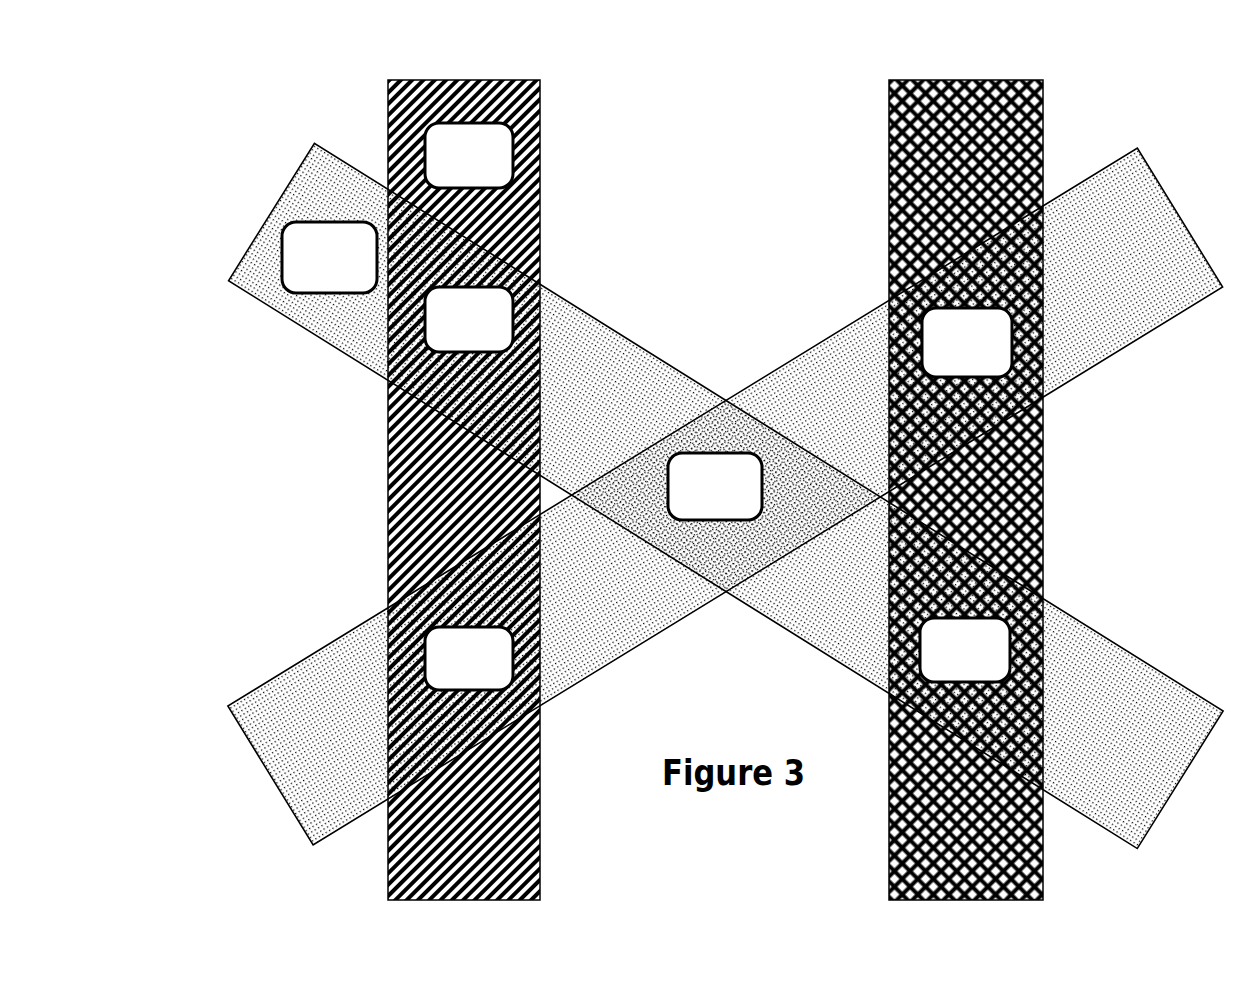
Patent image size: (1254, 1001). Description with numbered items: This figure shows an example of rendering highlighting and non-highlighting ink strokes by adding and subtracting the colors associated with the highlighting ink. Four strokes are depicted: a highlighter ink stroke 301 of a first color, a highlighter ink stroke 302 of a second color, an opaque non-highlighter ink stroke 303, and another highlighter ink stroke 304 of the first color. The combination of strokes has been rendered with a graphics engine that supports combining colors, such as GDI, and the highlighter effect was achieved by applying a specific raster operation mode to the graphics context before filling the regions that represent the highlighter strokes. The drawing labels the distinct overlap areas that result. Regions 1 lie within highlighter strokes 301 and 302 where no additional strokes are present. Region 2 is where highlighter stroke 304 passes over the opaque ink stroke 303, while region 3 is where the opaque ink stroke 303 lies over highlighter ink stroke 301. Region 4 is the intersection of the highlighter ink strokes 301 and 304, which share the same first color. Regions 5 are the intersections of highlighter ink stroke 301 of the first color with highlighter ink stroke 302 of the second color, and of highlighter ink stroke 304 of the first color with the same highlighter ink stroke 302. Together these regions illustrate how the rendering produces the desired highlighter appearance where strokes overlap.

The highlighter ink stroke 301 is at (268, 210).
The highlighter ink stroke 302 is at (463, 77).
The non-highlighter ink stroke 303 is at (963, 78).
The highlighter ink stroke 304 is at (270, 780).
The region 1 is at (397, 208).
The region 2 is at (967, 342).
The region 3 is at (965, 650).
The region 4 is at (715, 486).
The region 5 is at (469, 488).